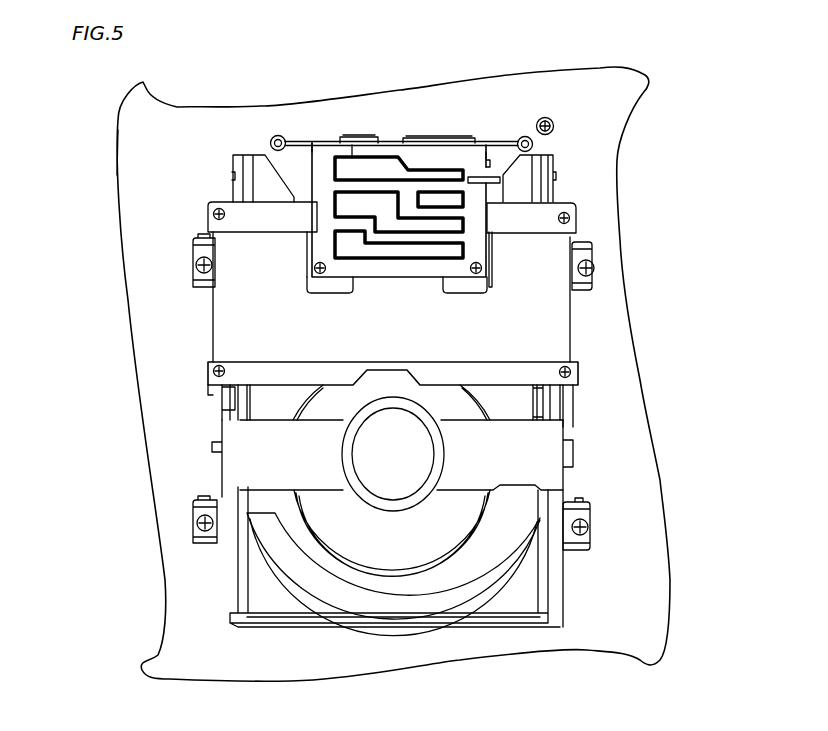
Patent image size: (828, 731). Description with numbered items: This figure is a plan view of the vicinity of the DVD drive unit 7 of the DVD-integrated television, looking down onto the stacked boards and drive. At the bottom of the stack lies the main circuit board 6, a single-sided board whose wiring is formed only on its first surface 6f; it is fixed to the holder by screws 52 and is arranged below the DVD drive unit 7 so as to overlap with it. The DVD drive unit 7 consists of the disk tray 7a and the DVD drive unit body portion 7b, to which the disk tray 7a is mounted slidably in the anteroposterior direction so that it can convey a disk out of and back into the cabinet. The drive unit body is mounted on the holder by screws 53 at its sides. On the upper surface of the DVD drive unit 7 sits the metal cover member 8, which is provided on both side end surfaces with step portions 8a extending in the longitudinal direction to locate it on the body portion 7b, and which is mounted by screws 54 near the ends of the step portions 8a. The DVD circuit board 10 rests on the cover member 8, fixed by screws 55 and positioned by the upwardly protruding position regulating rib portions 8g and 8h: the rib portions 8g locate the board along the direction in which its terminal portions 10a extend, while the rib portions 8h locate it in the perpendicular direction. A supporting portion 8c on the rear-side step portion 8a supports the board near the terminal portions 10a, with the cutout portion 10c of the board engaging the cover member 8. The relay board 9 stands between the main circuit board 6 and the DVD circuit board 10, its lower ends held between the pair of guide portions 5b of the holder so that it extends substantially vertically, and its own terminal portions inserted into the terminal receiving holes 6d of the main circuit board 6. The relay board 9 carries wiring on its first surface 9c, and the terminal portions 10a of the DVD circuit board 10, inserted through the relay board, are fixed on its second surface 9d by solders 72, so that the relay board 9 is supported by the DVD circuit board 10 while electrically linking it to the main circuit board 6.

The guide portion 5b is at (277, 138).
The main circuit board 6 is at (142, 115).
The first surface 6f is at (142, 153).
The terminal receiving hole 6d is at (281, 136).
The DVD drive unit 7 is at (257, 602).
The disk tray 7a is at (257, 567).
The DVD drive unit body portion 7b is at (257, 455).
The cover member 8 is at (223, 387).
The step portion 8a is at (207, 240).
The supporting portion 8c is at (486, 183).
The position regulating rib portion 8g is at (322, 290).
The position regulating rib portion 8h is at (307, 253).
The relay board 9 is at (338, 140).
The first surface 9c is at (355, 150).
The second surface 9d is at (319, 140).
The DVD circuit board 10 is at (394, 263).
The terminal portion 10a is at (385, 136).
The cutout portion 10c is at (489, 156).
The screw 52 is at (554, 126).
The screw 53 is at (195, 267).
The screw 54 is at (213, 213).
The screw 55 is at (312, 272).
The solder 72 is at (384, 135).